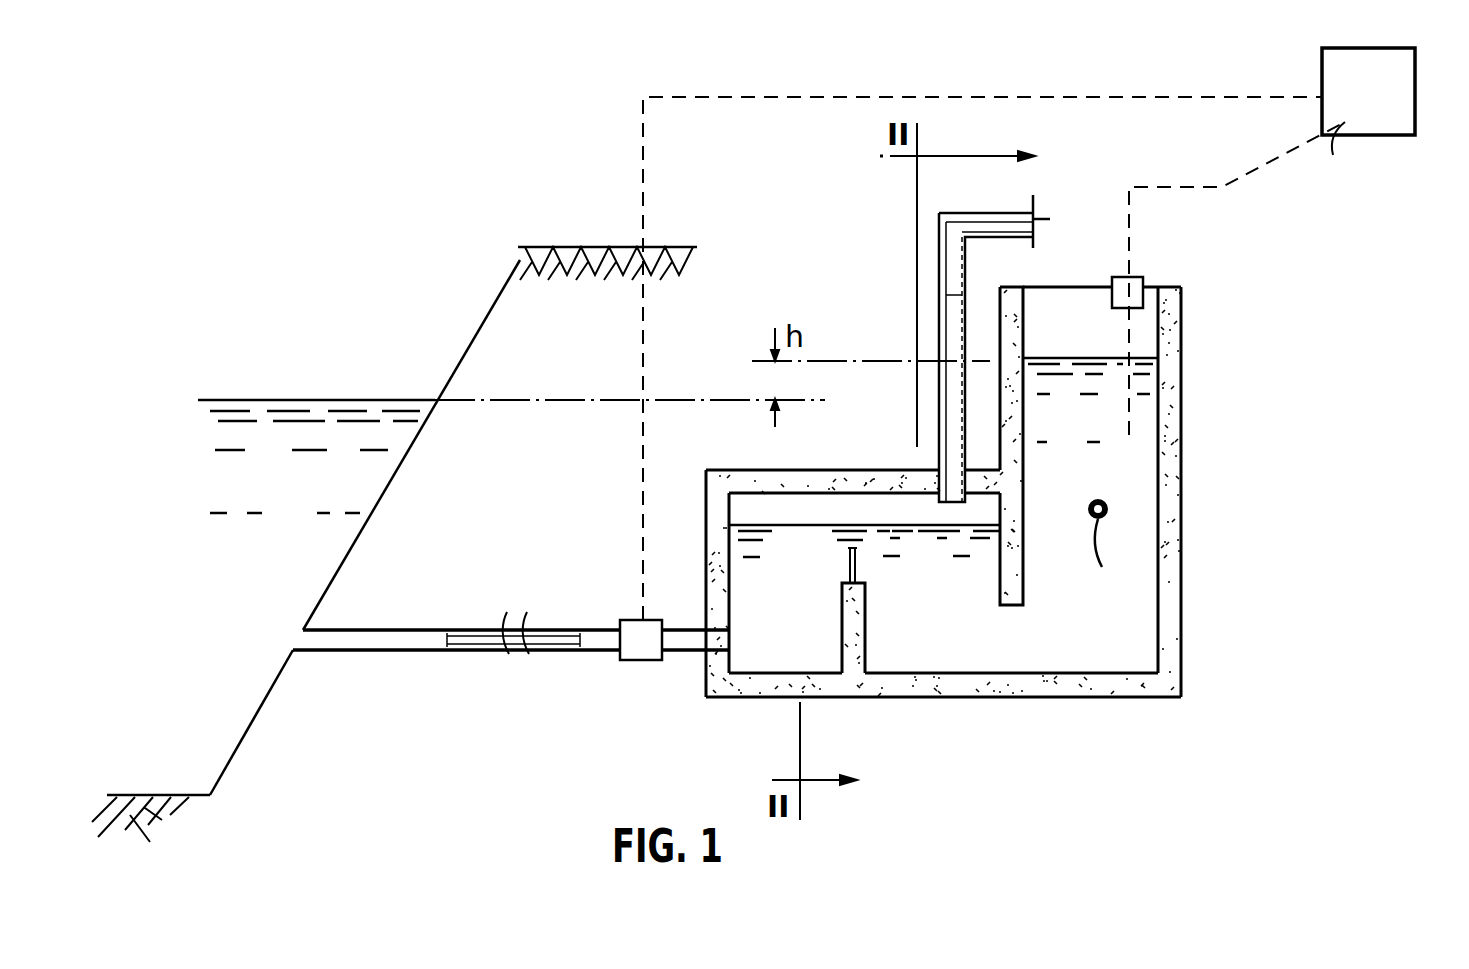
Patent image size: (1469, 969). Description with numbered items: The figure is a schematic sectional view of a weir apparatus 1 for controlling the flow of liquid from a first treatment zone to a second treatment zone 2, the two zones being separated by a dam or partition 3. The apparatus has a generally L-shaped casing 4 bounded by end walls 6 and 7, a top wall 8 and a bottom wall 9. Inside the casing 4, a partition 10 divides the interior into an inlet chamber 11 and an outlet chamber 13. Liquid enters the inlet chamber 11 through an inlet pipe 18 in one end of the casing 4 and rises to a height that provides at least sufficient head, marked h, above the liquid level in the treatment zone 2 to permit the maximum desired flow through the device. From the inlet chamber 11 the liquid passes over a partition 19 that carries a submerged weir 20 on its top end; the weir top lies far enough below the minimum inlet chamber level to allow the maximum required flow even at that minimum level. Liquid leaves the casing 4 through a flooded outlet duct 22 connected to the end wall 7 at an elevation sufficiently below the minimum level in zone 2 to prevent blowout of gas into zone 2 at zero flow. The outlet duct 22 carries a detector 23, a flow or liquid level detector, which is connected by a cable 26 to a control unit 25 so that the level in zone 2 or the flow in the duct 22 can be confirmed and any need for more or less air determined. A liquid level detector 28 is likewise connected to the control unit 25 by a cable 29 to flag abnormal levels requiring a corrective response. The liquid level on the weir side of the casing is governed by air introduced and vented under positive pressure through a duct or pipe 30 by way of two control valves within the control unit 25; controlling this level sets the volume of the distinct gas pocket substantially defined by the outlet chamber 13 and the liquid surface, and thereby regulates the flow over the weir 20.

The weir apparatus 1 is at (1210, 670).
The second treatment zone 2 is at (292, 524).
The dam or partition 3 is at (510, 298).
The casing 4 is at (1183, 700).
The end wall 6 is at (1177, 536).
The end wall 7 is at (707, 508).
The top wall 8 is at (873, 477).
The bottom wall 9 is at (1078, 690).
The partition 10 is at (1023, 580).
The inlet chamber 11 is at (1145, 470).
The outlet chamber 13 is at (792, 503).
The inlet pipe 18 is at (1118, 542).
The partition 19 is at (865, 640).
The submerged weir 20 is at (850, 550).
The outlet duct 22 is at (485, 632).
The detector 23 is at (630, 662).
The control unit 25 is at (1325, 52).
The cable 26 is at (640, 155).
The liquid level detector 28 is at (1140, 280).
The cable 29 is at (1235, 170).
The duct or pipe 30 is at (1000, 212).